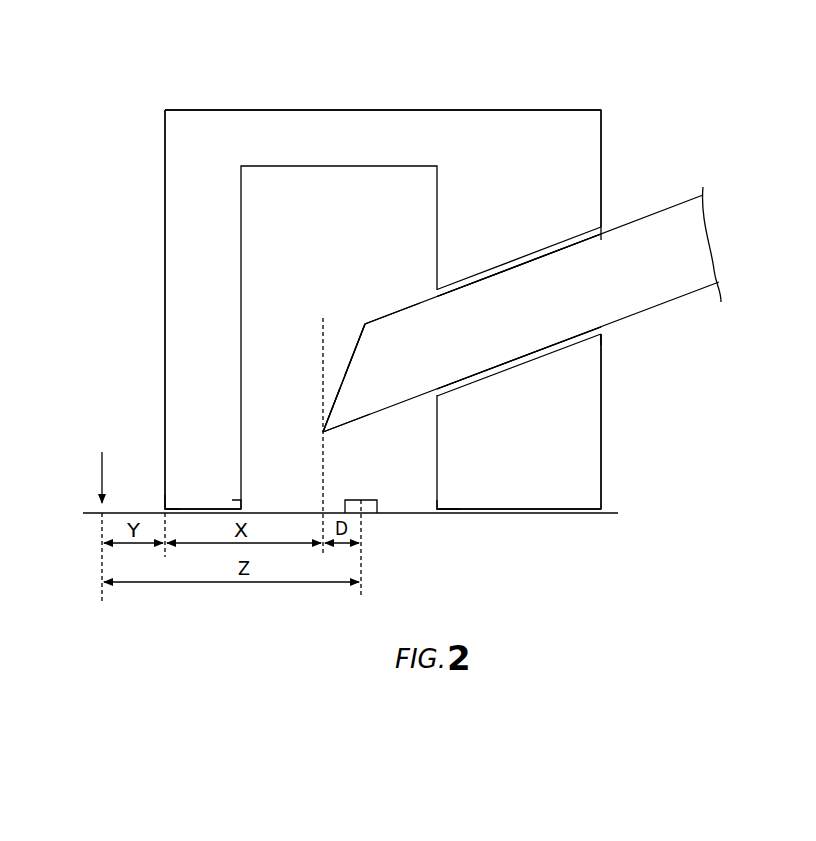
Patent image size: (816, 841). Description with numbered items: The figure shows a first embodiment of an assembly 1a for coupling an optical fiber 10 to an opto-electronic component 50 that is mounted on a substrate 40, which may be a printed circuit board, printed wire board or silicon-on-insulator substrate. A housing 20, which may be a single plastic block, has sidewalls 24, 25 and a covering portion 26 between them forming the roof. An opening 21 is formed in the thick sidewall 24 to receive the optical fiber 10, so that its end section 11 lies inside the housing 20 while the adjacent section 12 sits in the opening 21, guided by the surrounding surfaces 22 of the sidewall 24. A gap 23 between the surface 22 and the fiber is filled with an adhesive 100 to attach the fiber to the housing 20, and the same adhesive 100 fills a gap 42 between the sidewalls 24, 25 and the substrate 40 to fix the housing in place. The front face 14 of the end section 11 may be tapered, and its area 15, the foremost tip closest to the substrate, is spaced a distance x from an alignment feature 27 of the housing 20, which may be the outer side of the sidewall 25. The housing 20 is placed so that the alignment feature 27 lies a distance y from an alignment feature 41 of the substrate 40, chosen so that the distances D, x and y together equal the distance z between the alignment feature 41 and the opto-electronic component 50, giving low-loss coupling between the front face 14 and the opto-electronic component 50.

The assembly 1a is at (579, 98).
The optical fiber 10 is at (680, 278).
The end section 11 is at (396, 312).
The adjacent section 12 is at (548, 322).
The front face 14 is at (347, 366).
The area 15 is at (320, 432).
The housing 20 is at (602, 146).
The opening 21 is at (574, 236).
The surfaces 22 is at (530, 253).
The gap 23 is at (476, 282).
The sidewall 24 is at (566, 496).
The sidewall 25 is at (182, 279).
The covering portion 26 is at (378, 118).
The alignment feature 27 is at (161, 509).
The substrate 40 is at (412, 514).
The alignment feature 41 is at (101, 478).
The gap 42 is at (197, 509).
The opto-electronic component 50 is at (352, 500).
The adhesive 100 is at (603, 226).